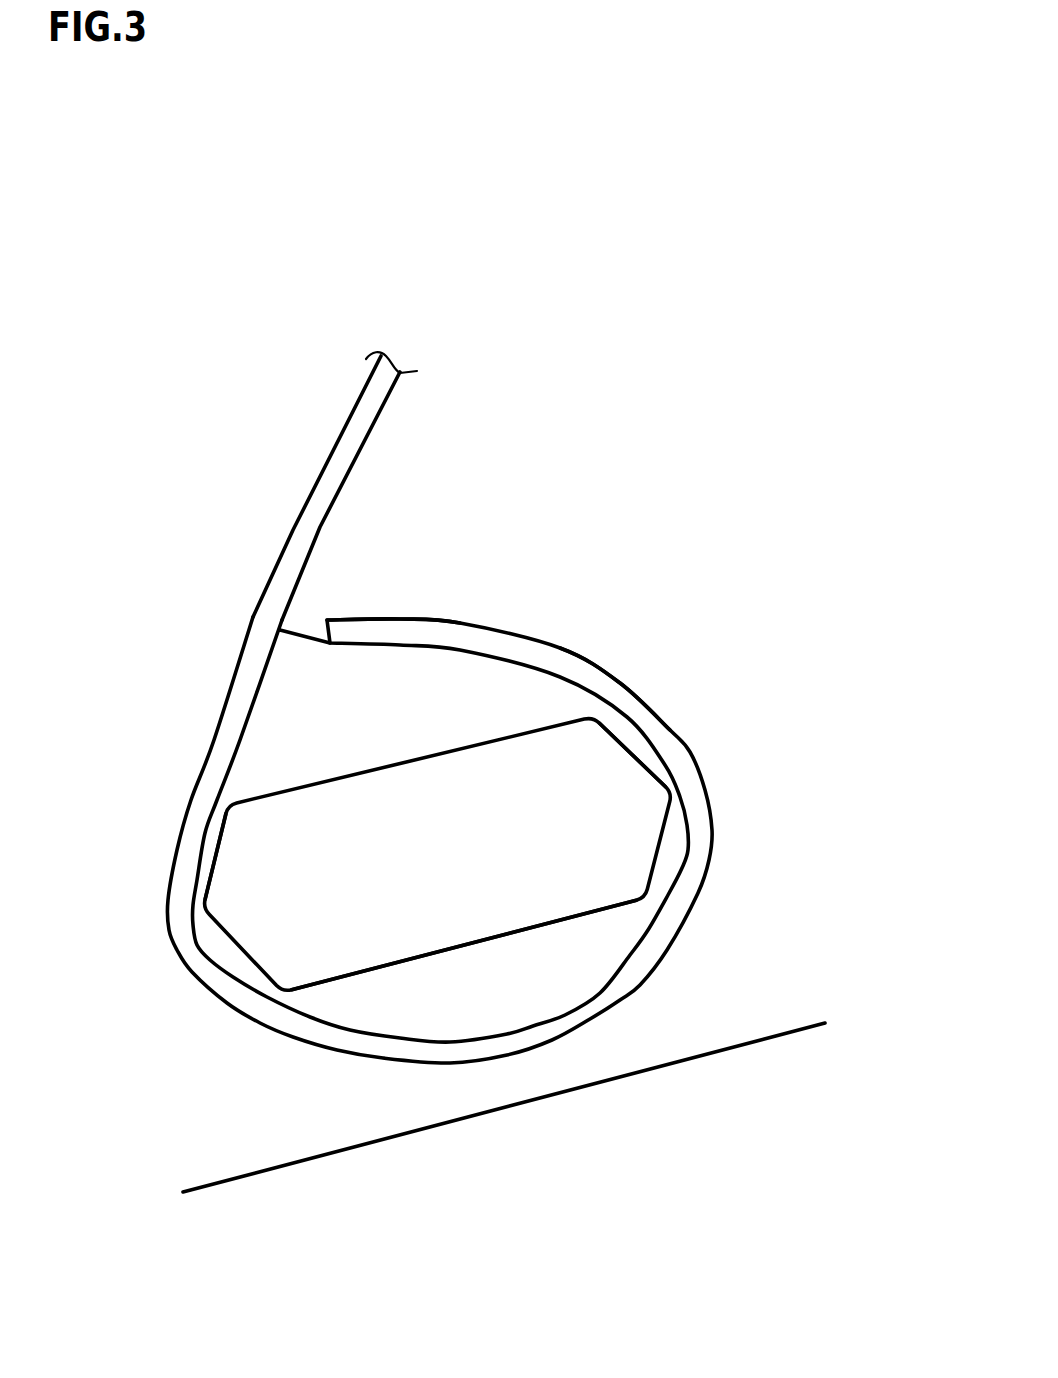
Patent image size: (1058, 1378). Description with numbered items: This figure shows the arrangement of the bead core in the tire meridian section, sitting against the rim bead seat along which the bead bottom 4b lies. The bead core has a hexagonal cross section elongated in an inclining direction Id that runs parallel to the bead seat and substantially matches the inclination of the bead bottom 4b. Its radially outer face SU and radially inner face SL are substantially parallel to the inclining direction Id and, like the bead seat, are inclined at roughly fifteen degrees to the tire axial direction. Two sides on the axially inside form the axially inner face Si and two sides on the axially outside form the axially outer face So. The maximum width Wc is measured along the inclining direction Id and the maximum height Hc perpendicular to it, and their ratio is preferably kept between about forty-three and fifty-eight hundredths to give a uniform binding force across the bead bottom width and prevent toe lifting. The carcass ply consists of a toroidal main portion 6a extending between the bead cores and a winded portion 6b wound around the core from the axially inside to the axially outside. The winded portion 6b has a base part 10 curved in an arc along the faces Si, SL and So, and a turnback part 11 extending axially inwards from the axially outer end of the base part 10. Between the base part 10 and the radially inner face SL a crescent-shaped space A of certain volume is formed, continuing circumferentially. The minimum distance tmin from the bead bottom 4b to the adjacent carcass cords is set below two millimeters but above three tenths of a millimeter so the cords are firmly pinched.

The main portion 6a is at (340, 438).
The winded portion 6b is at (613, 673).
The turnback part 11 is at (402, 633).
The base part 10 is at (597, 1002).
The maximum width Wc is at (207, 880).
The maximum height Hc is at (470, 747).
The radial outer face SU is at (525, 728).
The radial inner face SL is at (353, 973).
The axially outer face So is at (656, 760).
The axially inner face Si is at (207, 880).
The minimum distance tmin is at (502, 1018).
The space A is at (413, 1003).
The inclining direction Id is at (320, 1195).
The bead bottom 4b is at (725, 1052).